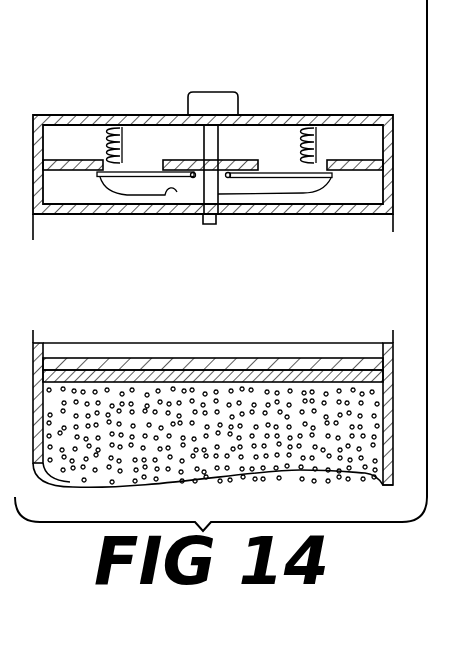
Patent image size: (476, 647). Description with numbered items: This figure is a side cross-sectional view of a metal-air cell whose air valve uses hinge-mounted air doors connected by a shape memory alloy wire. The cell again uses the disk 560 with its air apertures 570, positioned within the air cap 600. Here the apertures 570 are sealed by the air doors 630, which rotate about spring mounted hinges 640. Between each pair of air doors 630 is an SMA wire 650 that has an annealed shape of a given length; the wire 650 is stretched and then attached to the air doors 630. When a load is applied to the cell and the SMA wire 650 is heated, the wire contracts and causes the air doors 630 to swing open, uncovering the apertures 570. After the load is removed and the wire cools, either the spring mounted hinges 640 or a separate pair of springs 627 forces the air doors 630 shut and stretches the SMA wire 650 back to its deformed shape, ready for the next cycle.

The disk 560 is at (65, 158).
The air cap 600 is at (118, 124).
The air apertures 570 is at (139, 159).
The springs 627 is at (110, 136).
The spring mounted hinges 640 is at (217, 222).
The air doors 630 is at (127, 178).
The SMA wire 650 is at (177, 192).